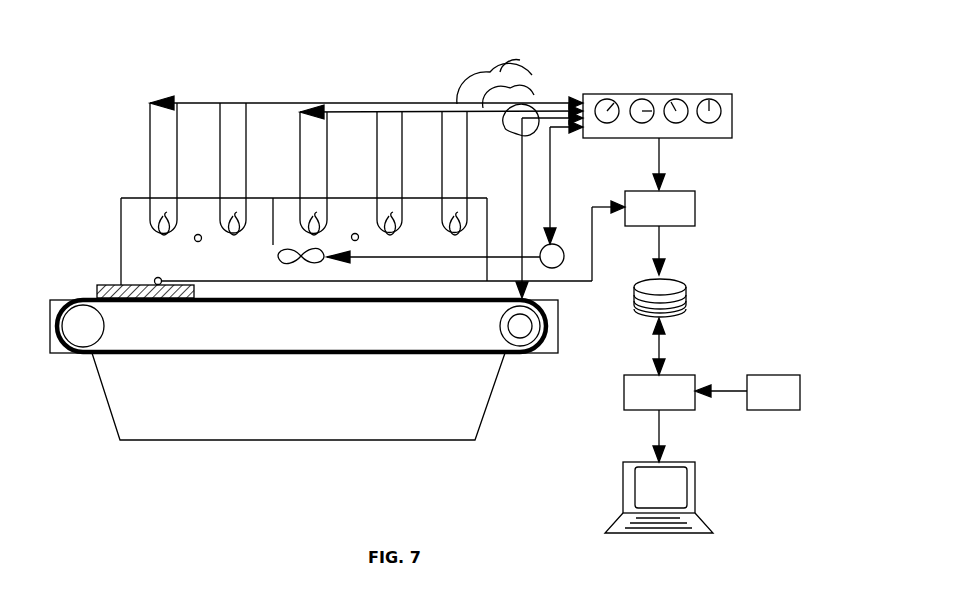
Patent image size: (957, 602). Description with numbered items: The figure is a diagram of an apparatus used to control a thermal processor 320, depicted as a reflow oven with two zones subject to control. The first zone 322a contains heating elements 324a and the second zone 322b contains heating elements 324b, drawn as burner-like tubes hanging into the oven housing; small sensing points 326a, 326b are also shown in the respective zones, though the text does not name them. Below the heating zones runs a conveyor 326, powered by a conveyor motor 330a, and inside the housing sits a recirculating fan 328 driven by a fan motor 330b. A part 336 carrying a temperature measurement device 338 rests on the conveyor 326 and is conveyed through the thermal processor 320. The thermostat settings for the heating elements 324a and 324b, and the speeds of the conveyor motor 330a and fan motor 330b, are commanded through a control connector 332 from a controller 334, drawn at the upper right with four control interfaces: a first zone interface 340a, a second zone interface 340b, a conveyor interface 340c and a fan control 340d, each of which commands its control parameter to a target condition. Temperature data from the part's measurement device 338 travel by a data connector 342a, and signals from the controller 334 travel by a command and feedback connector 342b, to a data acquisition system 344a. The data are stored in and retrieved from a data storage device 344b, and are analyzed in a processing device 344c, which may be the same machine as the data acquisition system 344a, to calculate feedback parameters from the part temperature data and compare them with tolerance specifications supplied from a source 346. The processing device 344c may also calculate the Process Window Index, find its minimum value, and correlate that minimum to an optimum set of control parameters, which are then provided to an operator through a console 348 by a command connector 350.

The thermal processor 320 is at (74, 408).
The first zone 322a is at (195, 197).
The second zone 322b is at (366, 197).
The heating elements 324a is at (224, 232).
The heating elements 324b is at (461, 234).
The conveyor 326 is at (72, 298).
The first temperature sensor 326a is at (199, 242).
The second temperature sensor 326b is at (347, 236).
The recirculating fan 328 is at (285, 247).
The conveyor motor 330a is at (506, 327).
The fan motor 330b is at (558, 245).
The control connector 332 is at (531, 72).
The controller 334 is at (672, 86).
The part 336 is at (108, 283).
The temperature measurement device 338 is at (163, 255).
The first zone interface 340a is at (606, 99).
The second zone interface 340b is at (640, 99).
The conveyor interface 340c is at (676, 99).
The fan control 340d is at (710, 99).
The data connector 342a is at (597, 284).
The command and feedback connector 342b is at (664, 155).
The data acquisition system 344a is at (697, 209).
The data storage device 344b is at (682, 292).
The processing device 344c is at (713, 363).
The source 346 is at (766, 375).
The console 348 is at (697, 477).
The command connector 350 is at (664, 420).